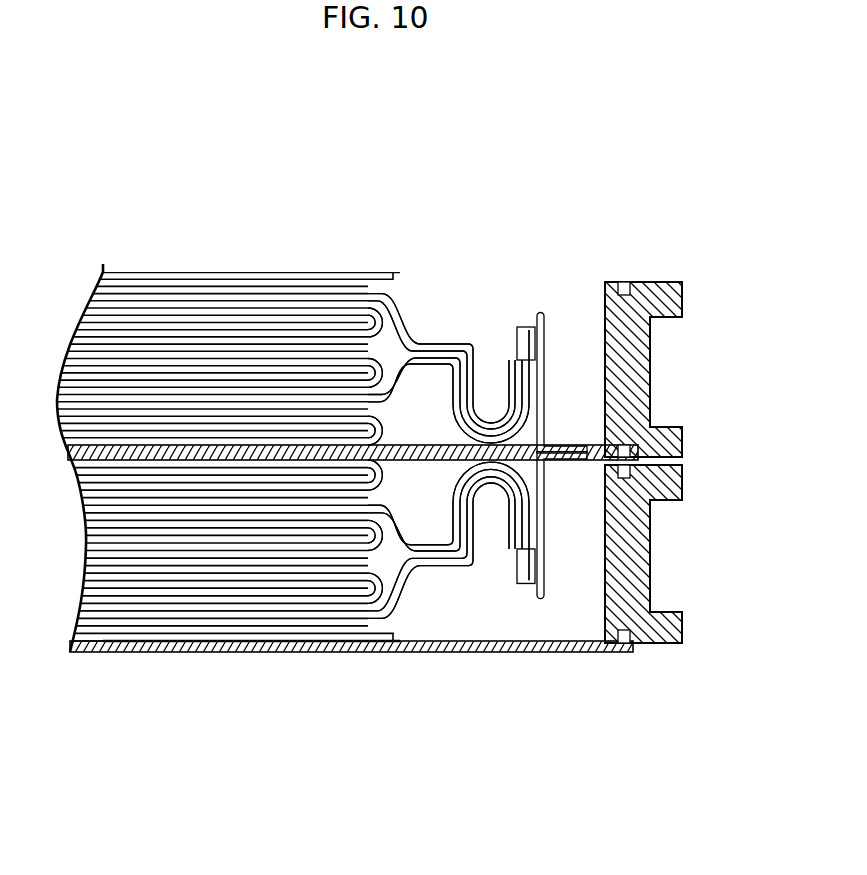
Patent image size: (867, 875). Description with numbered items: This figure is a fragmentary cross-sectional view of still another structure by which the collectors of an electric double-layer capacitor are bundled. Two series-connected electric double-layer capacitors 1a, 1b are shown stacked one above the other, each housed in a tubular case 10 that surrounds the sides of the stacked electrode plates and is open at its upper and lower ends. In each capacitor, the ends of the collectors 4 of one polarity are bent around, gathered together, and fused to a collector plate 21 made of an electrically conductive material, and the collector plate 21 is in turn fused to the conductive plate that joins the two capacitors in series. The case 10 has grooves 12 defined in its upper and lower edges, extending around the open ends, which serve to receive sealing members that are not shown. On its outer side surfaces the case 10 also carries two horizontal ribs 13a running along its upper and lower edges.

The electric double-layer capacitor 1a is at (366, 222).
The electric double-layer capacitor 1b is at (348, 713).
The collector 4 is at (405, 305).
The collector plate 21 is at (546, 313).
The groove 12 is at (624, 283).
The case 10 is at (665, 283).
The horizontal rib 13a is at (664, 318).